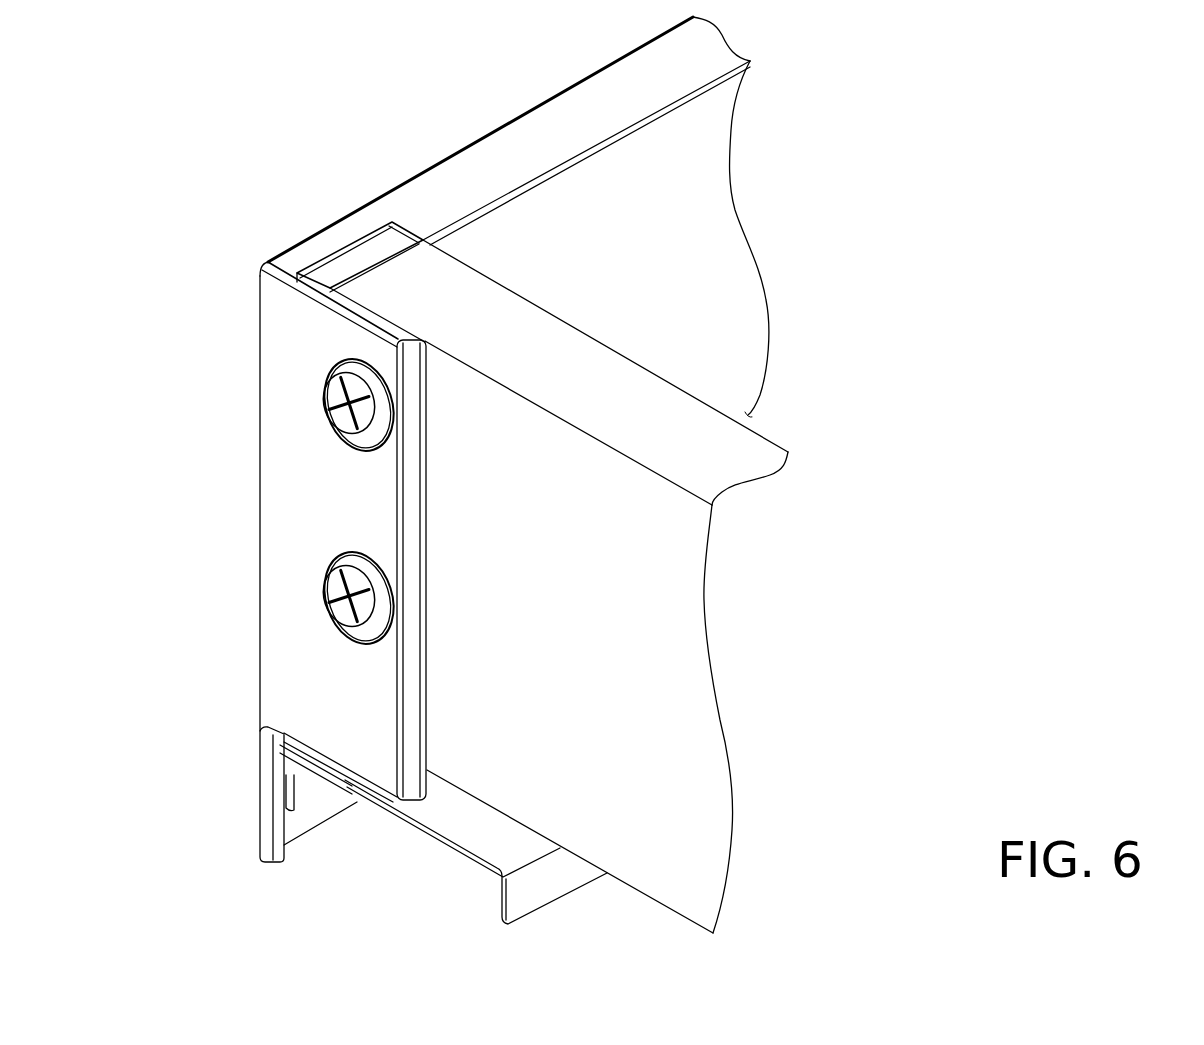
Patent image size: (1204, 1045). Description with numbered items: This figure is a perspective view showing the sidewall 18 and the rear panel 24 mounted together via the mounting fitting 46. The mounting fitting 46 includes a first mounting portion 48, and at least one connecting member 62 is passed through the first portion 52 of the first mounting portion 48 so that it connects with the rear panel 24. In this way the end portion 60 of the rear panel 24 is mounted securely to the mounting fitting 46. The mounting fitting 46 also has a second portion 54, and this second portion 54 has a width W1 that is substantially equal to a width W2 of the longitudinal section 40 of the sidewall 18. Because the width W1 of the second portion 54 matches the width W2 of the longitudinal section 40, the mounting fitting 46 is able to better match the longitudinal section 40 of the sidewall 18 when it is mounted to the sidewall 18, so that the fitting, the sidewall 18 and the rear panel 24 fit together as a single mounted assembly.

The sidewall 18 is at (436, 158).
The rear panel 24 is at (712, 633).
The longitudinal section 40 is at (311, 496).
The mounting fitting 46 is at (296, 294).
The first mounting portion 48 is at (300, 336).
The first portion 52 is at (337, 353).
The second portion 54 is at (260, 264).
The end portion 60 is at (430, 298).
The connecting member 62 is at (340, 424).
The width W1 is at (292, 272).
The width W2 is at (340, 250).